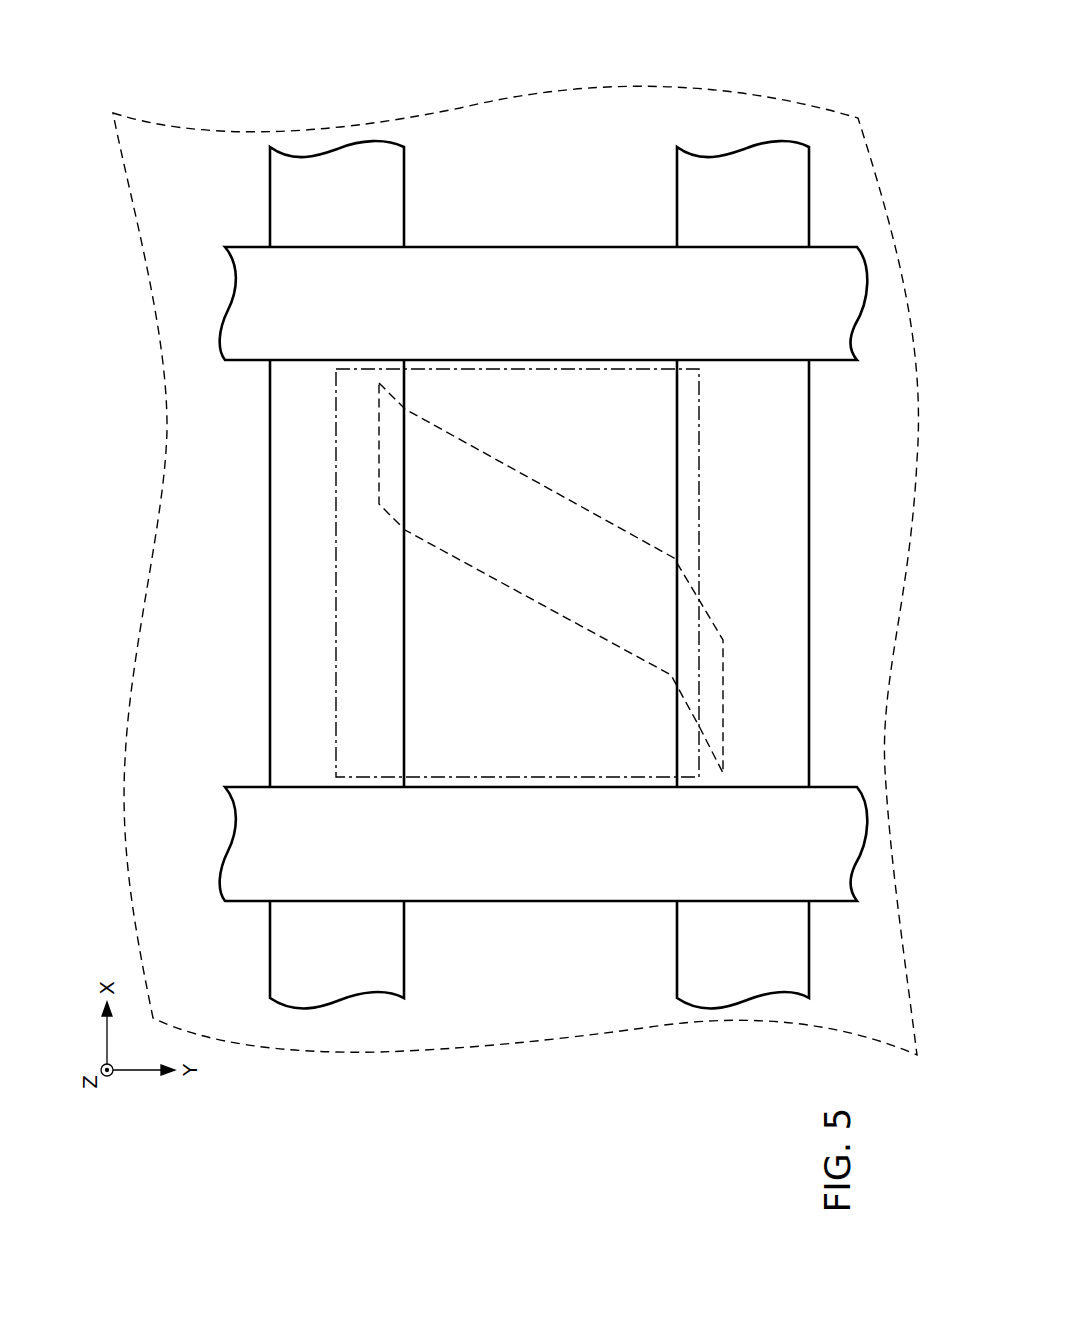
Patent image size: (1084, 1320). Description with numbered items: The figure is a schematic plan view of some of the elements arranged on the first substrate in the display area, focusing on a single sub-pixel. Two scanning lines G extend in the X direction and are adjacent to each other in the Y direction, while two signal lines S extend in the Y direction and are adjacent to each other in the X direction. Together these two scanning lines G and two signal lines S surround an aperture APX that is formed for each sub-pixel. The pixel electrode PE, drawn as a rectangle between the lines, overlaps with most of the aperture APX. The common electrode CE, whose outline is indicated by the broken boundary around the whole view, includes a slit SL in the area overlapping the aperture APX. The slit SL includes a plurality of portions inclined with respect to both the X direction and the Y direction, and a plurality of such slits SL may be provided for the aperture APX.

The common electrode CE is at (553, 92).
The signal line S is at (224, 311).
The scanning line G is at (270, 950).
The pixel electrode PE is at (336, 684).
The slit SL is at (588, 509).
The aperture APX is at (544, 398).